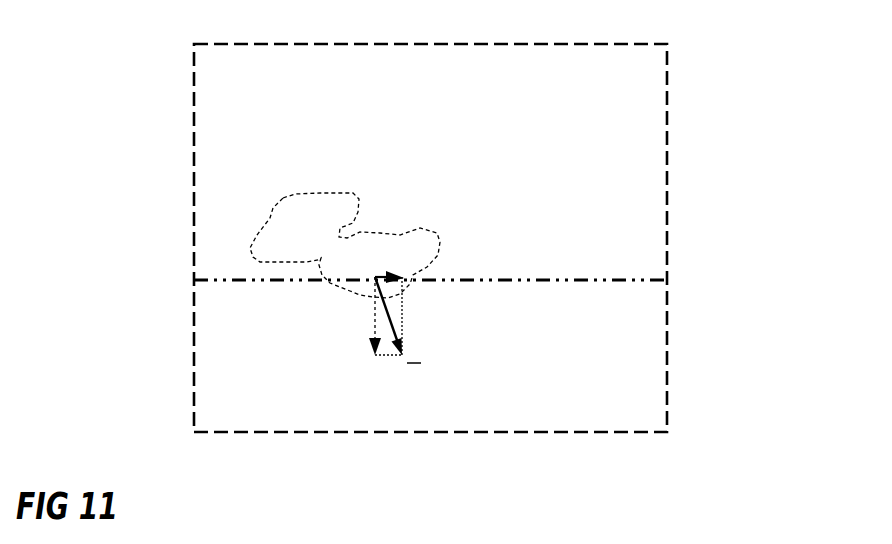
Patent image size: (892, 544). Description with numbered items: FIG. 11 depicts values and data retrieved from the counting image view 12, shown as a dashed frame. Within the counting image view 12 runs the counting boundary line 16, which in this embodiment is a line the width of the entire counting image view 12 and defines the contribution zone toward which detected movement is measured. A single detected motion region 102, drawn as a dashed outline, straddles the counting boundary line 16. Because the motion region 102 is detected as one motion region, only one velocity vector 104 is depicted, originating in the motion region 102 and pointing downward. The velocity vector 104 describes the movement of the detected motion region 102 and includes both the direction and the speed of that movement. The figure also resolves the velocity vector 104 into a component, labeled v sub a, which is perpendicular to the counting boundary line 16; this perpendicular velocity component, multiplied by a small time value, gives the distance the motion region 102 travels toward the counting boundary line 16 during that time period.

The counting image view 12 is at (203, 100).
The counting boundary line 16 is at (655, 281).
The motion region 102 is at (322, 260).
The velocity vector 104 is at (403, 350).